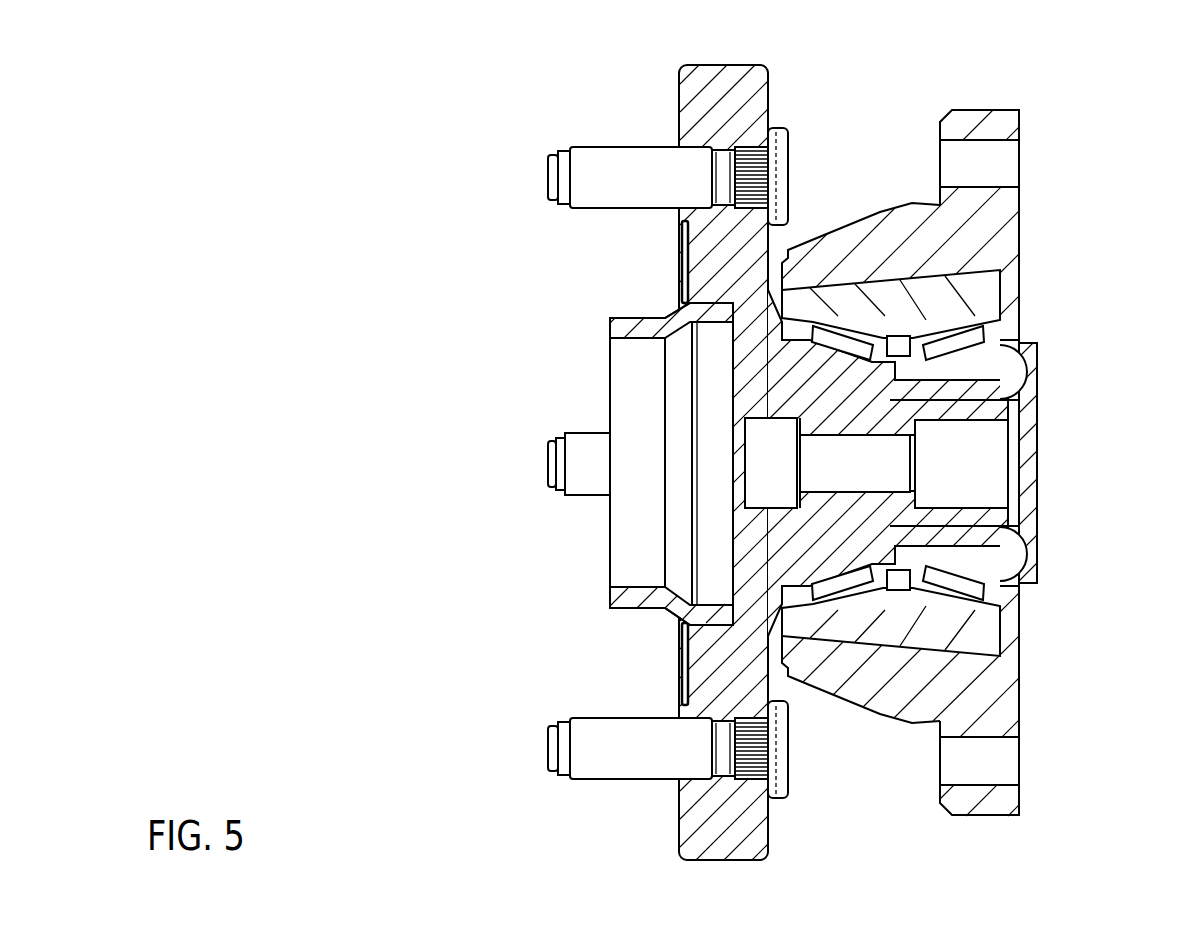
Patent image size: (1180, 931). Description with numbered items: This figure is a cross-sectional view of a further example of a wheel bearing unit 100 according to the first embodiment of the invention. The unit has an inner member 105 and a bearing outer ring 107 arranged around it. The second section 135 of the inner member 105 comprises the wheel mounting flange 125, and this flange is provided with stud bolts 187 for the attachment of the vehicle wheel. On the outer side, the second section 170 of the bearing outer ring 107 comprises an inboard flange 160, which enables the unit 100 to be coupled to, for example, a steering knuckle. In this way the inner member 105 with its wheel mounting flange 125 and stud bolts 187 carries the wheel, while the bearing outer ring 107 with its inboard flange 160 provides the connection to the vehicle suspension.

The wheel bearing unit 100 is at (425, 150).
The inner member 105 is at (648, 650).
The bearing outer ring 107 is at (885, 190).
The wheel mounting flange 125 is at (700, 108).
The second section of the inner member 135 is at (762, 390).
The inboard flange 160 is at (1000, 127).
The second section of the bearing outer ring 170 is at (930, 237).
The stud bolts 187 is at (622, 197).